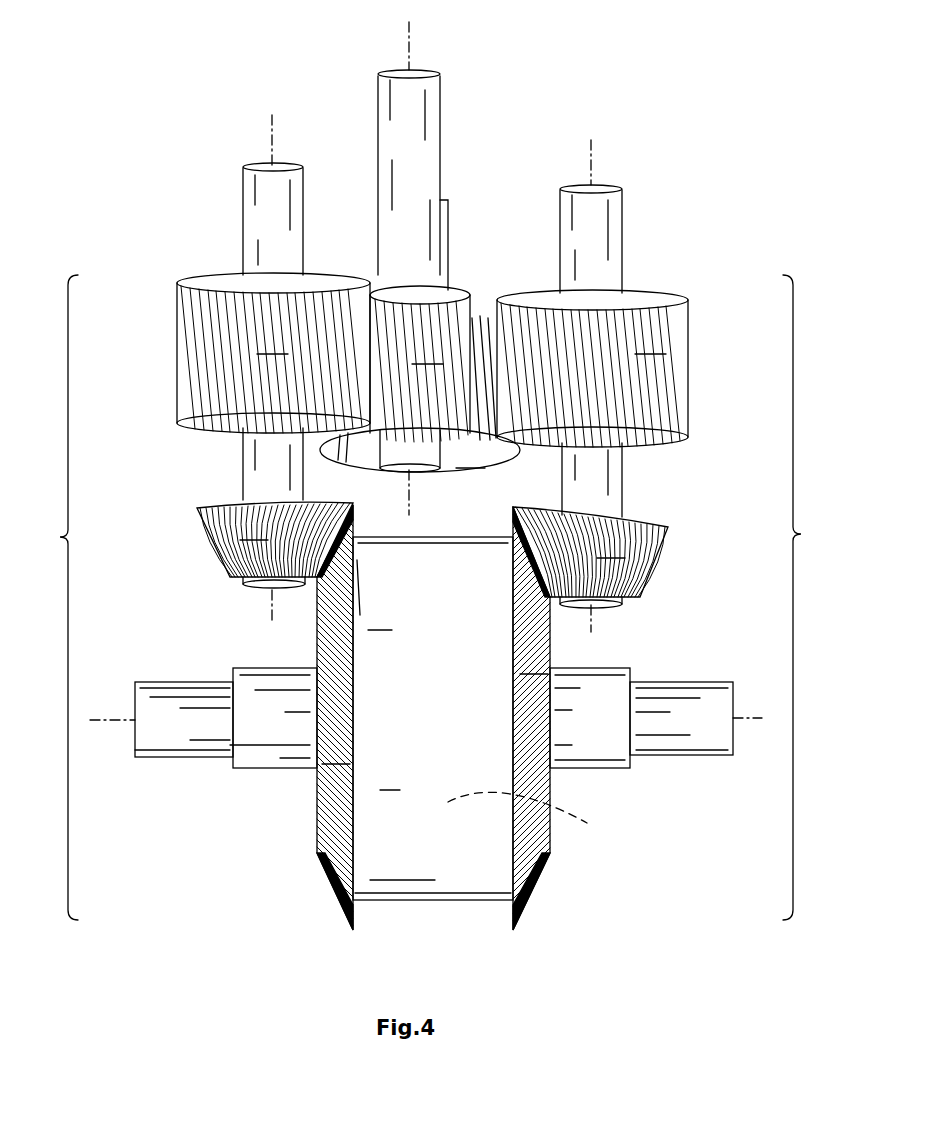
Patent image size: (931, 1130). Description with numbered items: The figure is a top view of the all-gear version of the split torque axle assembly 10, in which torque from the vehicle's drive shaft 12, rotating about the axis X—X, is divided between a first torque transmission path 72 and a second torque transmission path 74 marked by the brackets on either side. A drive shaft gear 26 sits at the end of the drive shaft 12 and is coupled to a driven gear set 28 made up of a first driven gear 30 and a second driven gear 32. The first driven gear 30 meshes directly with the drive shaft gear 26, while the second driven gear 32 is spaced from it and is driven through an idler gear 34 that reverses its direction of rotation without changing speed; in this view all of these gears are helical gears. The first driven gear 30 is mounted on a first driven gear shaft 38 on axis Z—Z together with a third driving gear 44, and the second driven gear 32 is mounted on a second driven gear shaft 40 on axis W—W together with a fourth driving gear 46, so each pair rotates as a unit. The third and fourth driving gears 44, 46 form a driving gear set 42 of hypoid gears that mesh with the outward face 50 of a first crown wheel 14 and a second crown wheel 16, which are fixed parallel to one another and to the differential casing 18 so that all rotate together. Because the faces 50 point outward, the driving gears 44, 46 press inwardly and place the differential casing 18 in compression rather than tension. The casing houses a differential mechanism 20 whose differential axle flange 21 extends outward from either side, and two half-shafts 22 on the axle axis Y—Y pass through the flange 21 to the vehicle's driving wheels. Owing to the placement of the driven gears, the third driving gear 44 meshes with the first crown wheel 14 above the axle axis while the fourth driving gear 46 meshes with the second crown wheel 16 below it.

The split torque axle assembly 10 is at (648, 88).
The drive shaft 12 is at (402, 140).
The first crown wheel 14 is at (330, 885).
The second crown wheel 16 is at (548, 855).
The differential casing 18 is at (458, 880).
The differential mechanism 20 is at (530, 817).
The differential axle flange 21 is at (275, 770).
The half-shafts 22 is at (162, 740).
The drive shaft gear 26 is at (458, 292).
The driven gear set 28 is at (170, 400).
The first driven gear 30 is at (222, 285).
The second driven gear 32 is at (672, 365).
The idler gear 34 is at (483, 315).
The first driven gear shaft 38 is at (280, 200).
The second driven gear shaft 40 is at (594, 240).
The driving gear set 42 is at (195, 537).
The third driving gear 44 is at (245, 563).
The fourth driving gear 46 is at (618, 590).
The face 50 is at (335, 668).
The first torque transmission path 72 is at (54, 597).
The second torque transmission path 74 is at (807, 597).